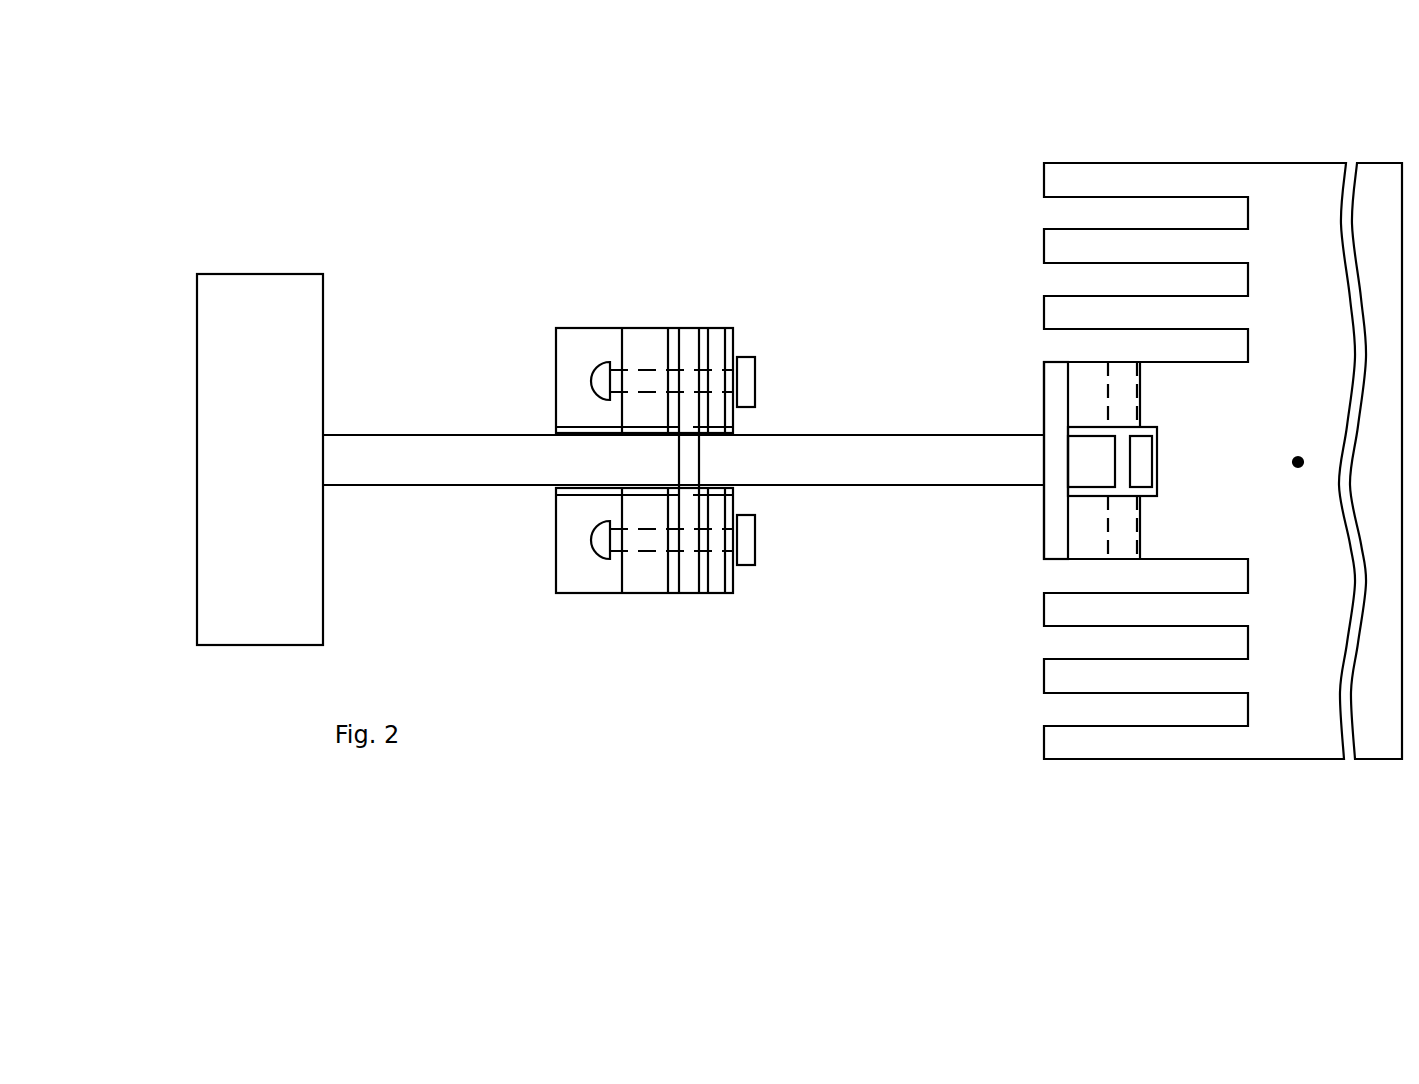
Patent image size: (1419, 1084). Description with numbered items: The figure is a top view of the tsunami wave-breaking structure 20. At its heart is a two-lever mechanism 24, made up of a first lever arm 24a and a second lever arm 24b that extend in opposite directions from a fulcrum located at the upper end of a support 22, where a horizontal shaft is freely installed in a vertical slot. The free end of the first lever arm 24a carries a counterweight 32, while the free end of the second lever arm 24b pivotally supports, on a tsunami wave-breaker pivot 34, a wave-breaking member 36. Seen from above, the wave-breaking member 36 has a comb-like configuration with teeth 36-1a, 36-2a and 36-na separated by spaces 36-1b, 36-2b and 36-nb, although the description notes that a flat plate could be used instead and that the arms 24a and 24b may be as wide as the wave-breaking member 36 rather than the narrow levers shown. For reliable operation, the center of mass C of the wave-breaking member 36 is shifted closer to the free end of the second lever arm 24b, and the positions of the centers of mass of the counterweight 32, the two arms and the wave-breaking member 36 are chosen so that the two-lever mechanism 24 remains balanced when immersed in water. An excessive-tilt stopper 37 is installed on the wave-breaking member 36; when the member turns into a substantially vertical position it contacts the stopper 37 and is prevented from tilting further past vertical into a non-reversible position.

The structure 20 is at (583, 222).
The support 22 is at (604, 340).
The two-lever mechanism 24 is at (772, 415).
The first lever arm 24a is at (409, 445).
The second lever arm 24b is at (880, 445).
The counterweight 32 is at (252, 286).
The tsunami wave-breaker pivot 34 is at (1125, 465).
The wave-breaking member 36 is at (1187, 126).
The tooth 36-1a is at (1060, 183).
The space 36-1b is at (1060, 217).
The tooth 36-2a is at (1060, 248).
The space 36-2b is at (1060, 278).
The tooth 36-na is at (1073, 738).
The space 36-nb is at (1073, 708).
The excessive-tilt stopper 37 is at (1052, 378).
The center of mass C is at (1298, 462).